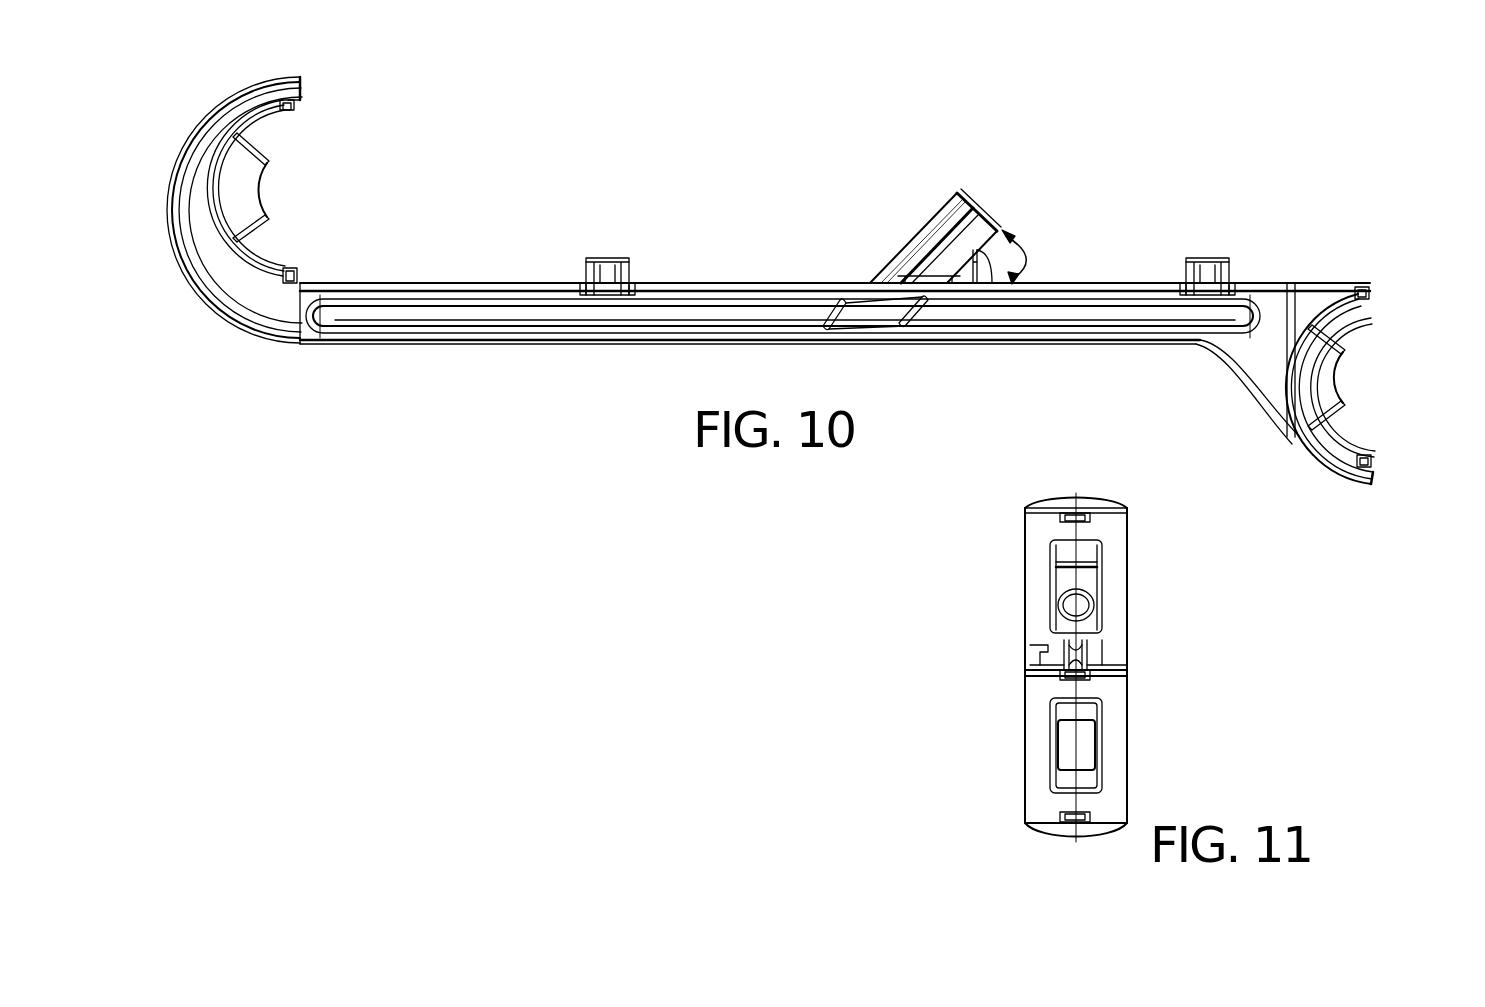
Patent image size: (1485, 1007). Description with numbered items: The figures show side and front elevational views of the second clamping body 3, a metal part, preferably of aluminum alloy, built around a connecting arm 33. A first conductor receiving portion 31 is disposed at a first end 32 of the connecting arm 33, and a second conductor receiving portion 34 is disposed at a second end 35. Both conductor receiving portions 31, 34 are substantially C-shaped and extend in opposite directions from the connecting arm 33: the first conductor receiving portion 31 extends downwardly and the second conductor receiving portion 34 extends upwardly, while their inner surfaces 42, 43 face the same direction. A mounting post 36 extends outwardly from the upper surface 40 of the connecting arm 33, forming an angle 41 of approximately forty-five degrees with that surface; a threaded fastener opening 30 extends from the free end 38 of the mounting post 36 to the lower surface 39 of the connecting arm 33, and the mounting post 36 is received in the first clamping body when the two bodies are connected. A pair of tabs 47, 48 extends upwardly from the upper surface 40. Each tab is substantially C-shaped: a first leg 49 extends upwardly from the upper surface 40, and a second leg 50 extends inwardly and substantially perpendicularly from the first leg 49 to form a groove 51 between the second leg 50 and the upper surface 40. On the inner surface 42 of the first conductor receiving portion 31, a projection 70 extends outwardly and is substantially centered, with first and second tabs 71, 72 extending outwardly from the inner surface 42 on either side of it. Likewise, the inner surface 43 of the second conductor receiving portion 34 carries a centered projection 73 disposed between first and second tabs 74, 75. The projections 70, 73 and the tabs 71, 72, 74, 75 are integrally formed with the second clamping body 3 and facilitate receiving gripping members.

In FIG. 10, the second clamping body 3 is at (510, 344).
In FIG. 11, the second clamping body 3 is at (1022, 531).
In FIG. 11, the threaded fastener opening 30 is at (1086, 608).
In FIG. 10, the first conductor receiving portion 31 is at (1277, 445).
In FIG. 10, the first end 32 is at (1378, 490).
In FIG. 11, the first end 32 is at (1042, 836).
In FIG. 10, the connecting arm 33 is at (455, 285).
In FIG. 10, the second conductor receiving portion 34 is at (180, 262).
In FIG. 10, the second end 35 is at (302, 82).
In FIG. 11, the second end 35 is at (1100, 498).
In FIG. 10, the mounting post 36 is at (902, 243).
In FIG. 11, the mounting post 36 is at (1092, 594).
In FIG. 10, the free end 38 is at (976, 192).
In FIG. 10, the lower surface 39 is at (686, 345).
In FIG. 10, the upper surface 40 is at (680, 285).
In FIG. 11, the upper surface 40 is at (1104, 652).
In FIG. 10, the angle 41 is at (1020, 254).
In FIG. 10, the inner surface 42 is at (1347, 440).
In FIG. 11, the inner surface 42 is at (1036, 710).
In FIG. 10, the inner surface 43 is at (280, 252).
In FIG. 11, the inner surface 43 is at (1035, 558).
In FIG. 10, the tab 47 is at (1207, 258).
In FIG. 11, the tab 47 is at (1040, 654).
In FIG. 10, the tab 48 is at (608, 258).
In FIG. 11, the first leg 49 is at (1045, 668).
In FIG. 11, the second leg 50 is at (1044, 624).
In FIG. 11, the groove 51 is at (1060, 676).
In FIG. 10, the projection 70 is at (1342, 356).
In FIG. 11, the projection 70 is at (1106, 742).
In FIG. 10, the first tab 71 is at (1372, 462).
In FIG. 11, the first tab 71 is at (1058, 816).
In FIG. 10, the second tab 72 is at (1368, 296).
In FIG. 11, the second tab 72 is at (1090, 686).
In FIG. 10, the projection 73 is at (268, 183).
In FIG. 11, the projection 73 is at (1050, 582).
In FIG. 10, the first tab 74 is at (292, 110).
In FIG. 11, the first tab 74 is at (1090, 521).
In FIG. 10, the second tab 75 is at (300, 270).